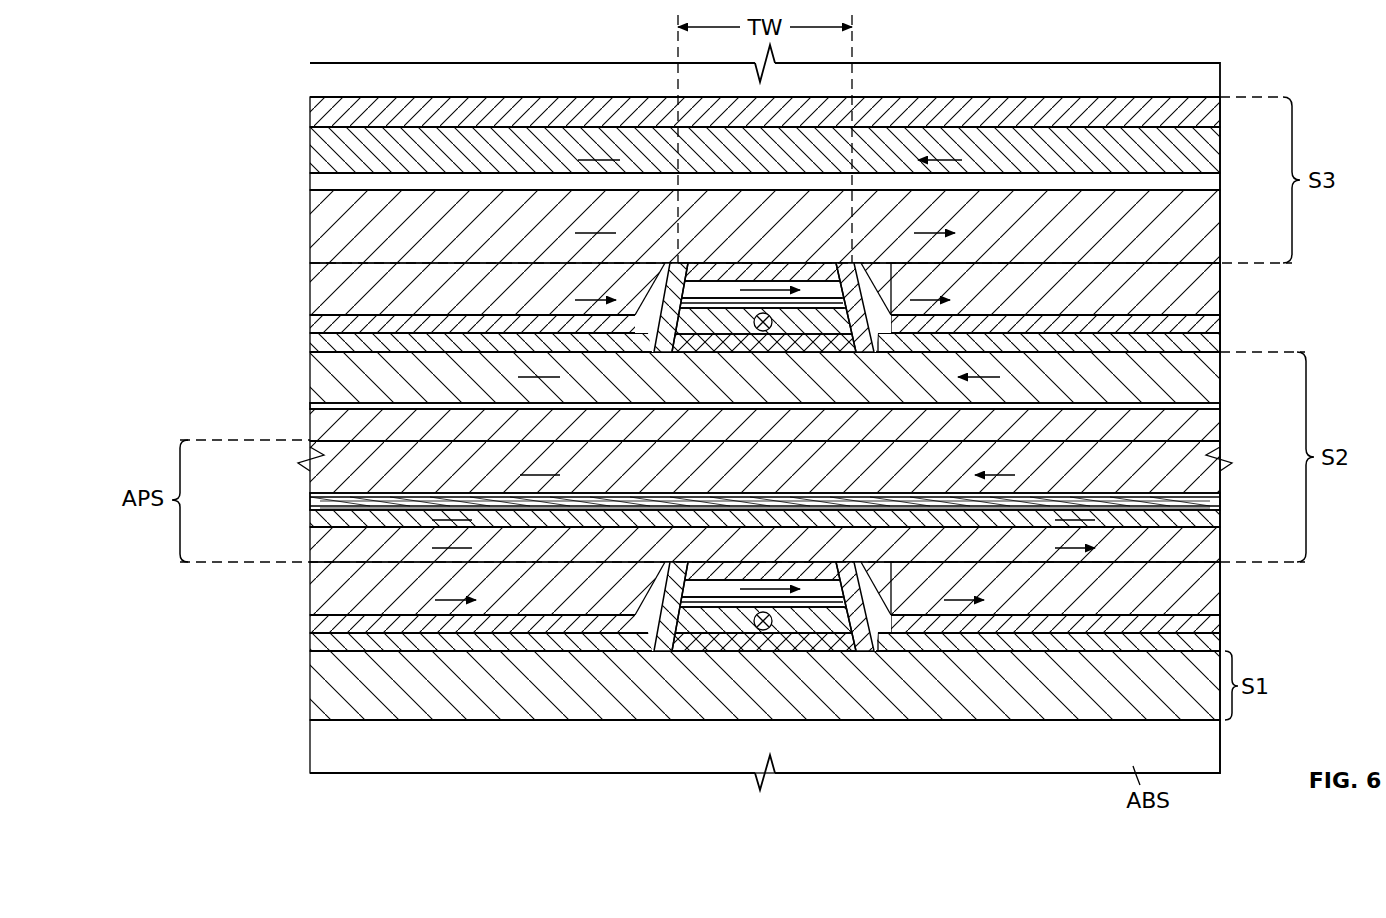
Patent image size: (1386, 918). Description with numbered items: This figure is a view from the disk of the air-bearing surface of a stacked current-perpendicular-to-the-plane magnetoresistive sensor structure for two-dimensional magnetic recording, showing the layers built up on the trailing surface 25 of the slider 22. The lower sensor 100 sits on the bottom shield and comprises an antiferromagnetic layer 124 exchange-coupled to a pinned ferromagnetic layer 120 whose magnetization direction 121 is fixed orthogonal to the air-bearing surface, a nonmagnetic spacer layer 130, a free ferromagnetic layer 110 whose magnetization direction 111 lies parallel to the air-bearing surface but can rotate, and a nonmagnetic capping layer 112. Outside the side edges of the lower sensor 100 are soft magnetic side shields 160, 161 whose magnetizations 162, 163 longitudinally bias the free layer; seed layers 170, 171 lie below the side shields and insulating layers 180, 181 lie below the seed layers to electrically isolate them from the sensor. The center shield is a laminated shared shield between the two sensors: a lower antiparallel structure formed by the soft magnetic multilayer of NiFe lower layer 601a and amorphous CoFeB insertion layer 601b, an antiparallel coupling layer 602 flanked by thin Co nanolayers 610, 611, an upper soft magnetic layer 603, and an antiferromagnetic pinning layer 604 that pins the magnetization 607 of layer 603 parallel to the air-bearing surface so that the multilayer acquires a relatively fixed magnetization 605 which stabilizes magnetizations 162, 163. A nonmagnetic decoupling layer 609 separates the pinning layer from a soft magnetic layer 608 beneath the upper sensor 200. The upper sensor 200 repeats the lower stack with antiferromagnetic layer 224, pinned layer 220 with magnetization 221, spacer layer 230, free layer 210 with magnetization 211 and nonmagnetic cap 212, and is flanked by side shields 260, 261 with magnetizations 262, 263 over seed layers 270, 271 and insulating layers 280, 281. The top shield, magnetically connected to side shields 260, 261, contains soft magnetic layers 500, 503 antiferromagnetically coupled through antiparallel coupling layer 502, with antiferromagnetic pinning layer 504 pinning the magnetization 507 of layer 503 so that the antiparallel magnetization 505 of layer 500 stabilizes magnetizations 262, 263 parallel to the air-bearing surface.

The slider 22 is at (384, 766).
The trailing surface 25 is at (313, 690).
The lower sensor 100 is at (727, 623).
The free ferromagnetic layer 110 is at (684, 566).
The magnetization direction 111 is at (712, 576).
The nonmagnetic capping layer 112 is at (790, 568).
The pinned ferromagnetic layer 120 is at (675, 648).
The magnetization direction 121 is at (770, 640).
The antiferromagnetic layer 124 is at (728, 648).
The nonmagnetic spacer layer 130 is at (826, 640).
The side shield 160 is at (313, 590).
The side shield 161 is at (1205, 580).
The magnetization 162 is at (455, 598).
The magnetization 163 is at (962, 598).
The seed layer 170 is at (313, 622).
The seed layer 171 is at (1215, 624).
The insulating layer 180 is at (313, 642).
The insulating layer 181 is at (1215, 642).
The upper sensor 200 is at (785, 299).
The free layer 210 is at (714, 276).
The magnetization 211 is at (790, 290).
The nonmagnetic cap 212 is at (772, 300).
The pinned layer 220 is at (672, 346).
The magnetization 221 is at (770, 335).
The antiferromagnetic layer 224 is at (732, 344).
The spacer layer 230 is at (672, 270).
The side shield 260 is at (313, 292).
The side shield 261 is at (1205, 292).
The magnetization 262 is at (585, 298).
The magnetization 263 is at (930, 298).
The seed layer 270 is at (500, 320).
The seed layer 271 is at (1003, 320).
The insulating layer 280 is at (412, 343).
The insulating layer 281 is at (1108, 342).
The soft magnetic layer 500 is at (313, 220).
The antiparallel coupling layer 502 is at (1098, 180).
The soft magnetic layer 503 is at (313, 150).
The antiferromagnetic pinning layer 504 is at (313, 106).
The magnetization 505 is at (602, 232).
The magnetization 507 is at (598, 162).
The lower layer 601a is at (313, 540).
The CoFeB alloy insertion layer 601b is at (313, 517).
The antiparallel coupling layer 602 is at (313, 503).
The upper soft magnetic layer 603 is at (300, 460).
The antiferromagnetic pinning layer 604 is at (313, 428).
The magnetization 605 is at (458, 548).
The magnetization 607 is at (538, 474).
The soft magnetic layer 608 is at (313, 360).
The nonmagnetic decoupling layer 609 is at (313, 406).
The Co nanolayer 610 is at (878, 512).
The Co nanolayer 611 is at (735, 497).